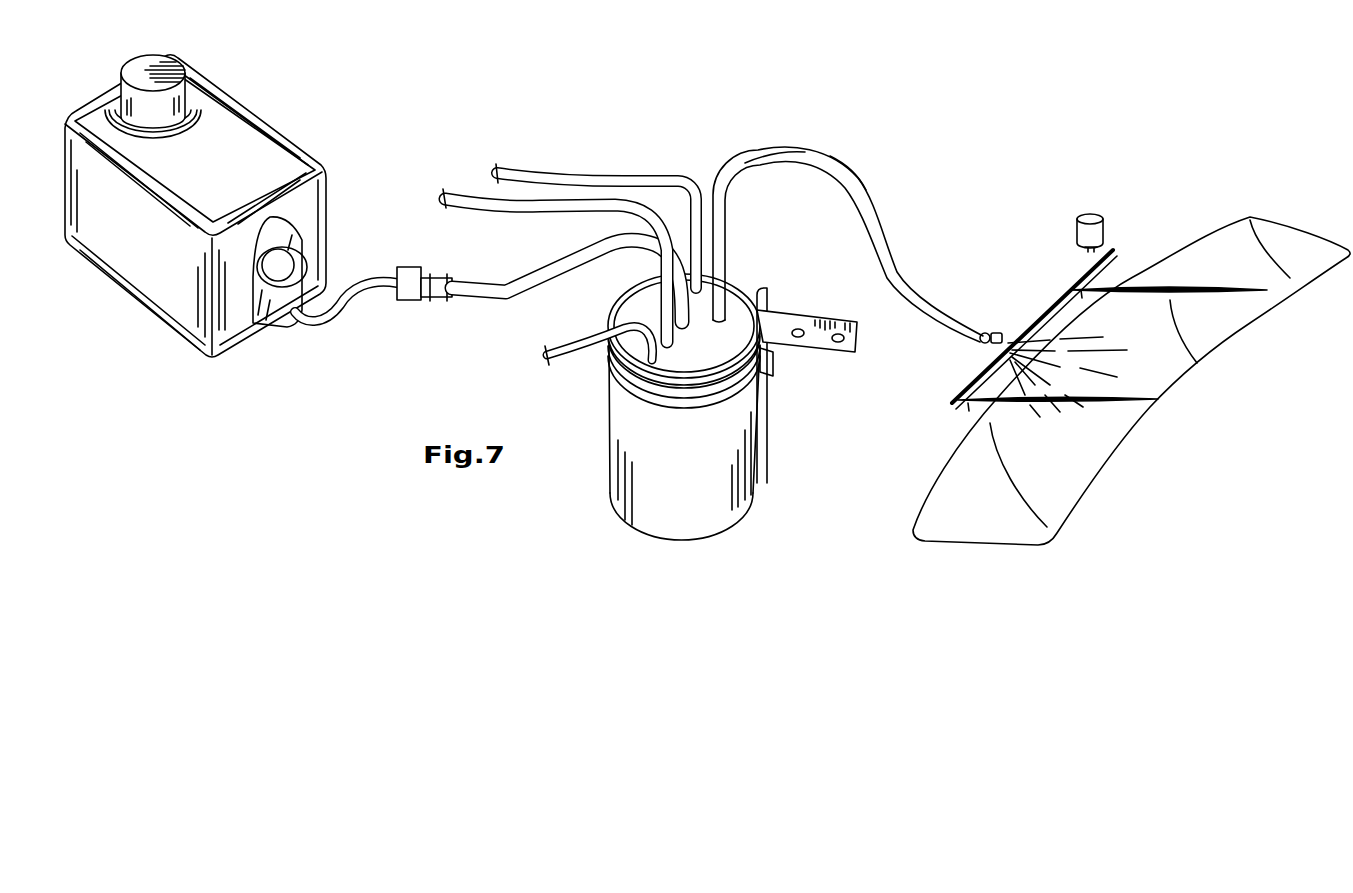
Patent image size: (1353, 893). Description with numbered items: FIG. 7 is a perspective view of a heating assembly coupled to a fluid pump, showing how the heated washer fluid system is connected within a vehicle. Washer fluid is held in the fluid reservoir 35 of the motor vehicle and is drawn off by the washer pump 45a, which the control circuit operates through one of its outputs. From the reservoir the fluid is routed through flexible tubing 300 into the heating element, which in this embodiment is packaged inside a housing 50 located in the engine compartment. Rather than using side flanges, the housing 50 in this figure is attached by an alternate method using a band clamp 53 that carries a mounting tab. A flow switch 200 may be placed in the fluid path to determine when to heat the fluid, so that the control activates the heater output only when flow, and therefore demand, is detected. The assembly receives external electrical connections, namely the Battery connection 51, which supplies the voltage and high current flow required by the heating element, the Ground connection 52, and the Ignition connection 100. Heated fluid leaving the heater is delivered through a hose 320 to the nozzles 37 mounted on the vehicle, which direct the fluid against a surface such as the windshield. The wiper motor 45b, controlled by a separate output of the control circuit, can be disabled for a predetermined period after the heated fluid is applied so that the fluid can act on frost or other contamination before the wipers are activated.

The fluid reservoir 35 is at (252, 150).
The washer pump 45a is at (268, 317).
The flow switch 200 is at (413, 266).
The flexible tubing 300 is at (565, 270).
The Ignition connection 100 is at (547, 350).
The Battery connection 51 is at (493, 170).
The Ground connection 52 is at (441, 193).
The housing 50 is at (710, 493).
The band clamp 53 is at (827, 335).
The nozzle feed hose 320 is at (928, 305).
The nozzles 37 is at (993, 330).
The wiper motor 45b is at (1077, 233).